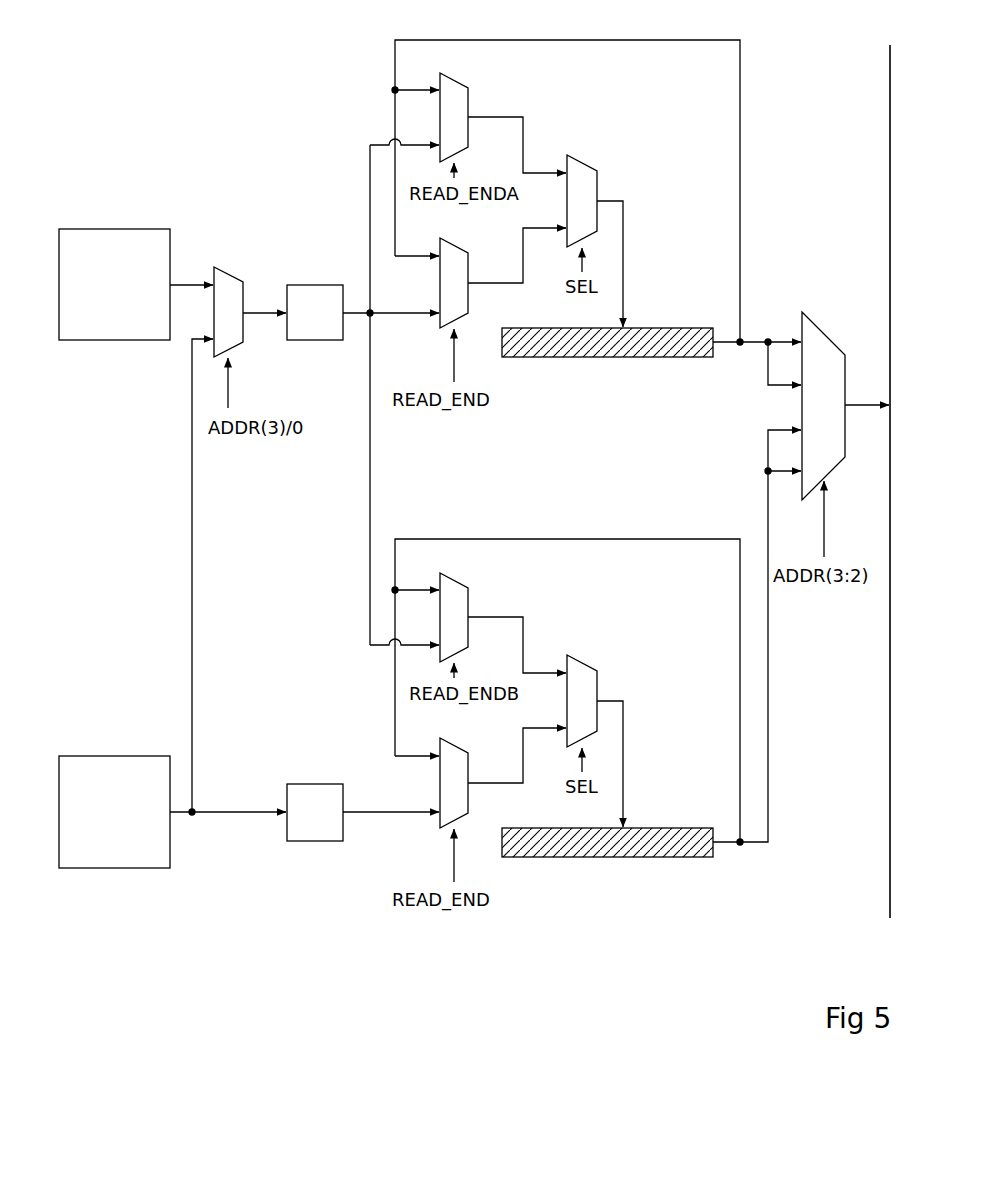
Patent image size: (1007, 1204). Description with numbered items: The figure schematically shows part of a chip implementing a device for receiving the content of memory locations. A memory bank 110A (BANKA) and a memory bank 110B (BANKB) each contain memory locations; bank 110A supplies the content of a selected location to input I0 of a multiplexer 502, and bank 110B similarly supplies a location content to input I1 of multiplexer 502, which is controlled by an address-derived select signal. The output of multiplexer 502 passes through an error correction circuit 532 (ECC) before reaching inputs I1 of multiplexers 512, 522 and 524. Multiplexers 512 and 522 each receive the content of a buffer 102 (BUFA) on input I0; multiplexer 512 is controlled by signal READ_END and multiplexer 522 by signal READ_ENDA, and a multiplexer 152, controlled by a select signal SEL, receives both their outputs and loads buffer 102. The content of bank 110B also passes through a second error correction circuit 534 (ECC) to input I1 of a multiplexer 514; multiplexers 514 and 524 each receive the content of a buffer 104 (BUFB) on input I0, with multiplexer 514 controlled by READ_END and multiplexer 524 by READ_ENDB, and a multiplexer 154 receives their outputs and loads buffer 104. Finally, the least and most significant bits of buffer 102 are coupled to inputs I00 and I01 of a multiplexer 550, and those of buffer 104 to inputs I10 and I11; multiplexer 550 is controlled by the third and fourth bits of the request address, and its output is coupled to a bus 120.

The memory bank 110A is at (90, 229).
The memory bank 110B is at (90, 756).
The multiplexer 502 is at (232, 267).
The error correction circuit 532 is at (316, 285).
The error correction circuit 534 is at (316, 784).
The multiplexer 522 is at (455, 118).
The multiplexer 512 is at (438, 324).
The multiplexer 524 is at (462, 604).
The multiplexer 514 is at (438, 824).
The multiplexer 152 is at (587, 192).
The multiplexer 154 is at (587, 692).
The buffer 102 is at (660, 347).
The buffer 104 is at (660, 847).
The multiplexer 550 is at (830, 346).
The bus 120 is at (888, 872).